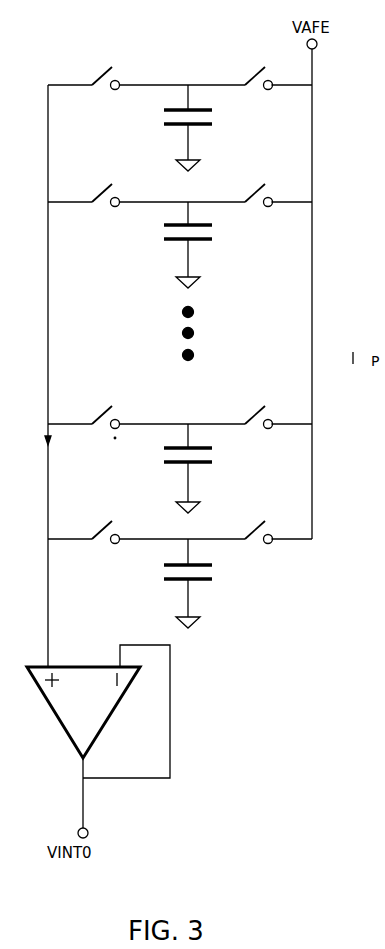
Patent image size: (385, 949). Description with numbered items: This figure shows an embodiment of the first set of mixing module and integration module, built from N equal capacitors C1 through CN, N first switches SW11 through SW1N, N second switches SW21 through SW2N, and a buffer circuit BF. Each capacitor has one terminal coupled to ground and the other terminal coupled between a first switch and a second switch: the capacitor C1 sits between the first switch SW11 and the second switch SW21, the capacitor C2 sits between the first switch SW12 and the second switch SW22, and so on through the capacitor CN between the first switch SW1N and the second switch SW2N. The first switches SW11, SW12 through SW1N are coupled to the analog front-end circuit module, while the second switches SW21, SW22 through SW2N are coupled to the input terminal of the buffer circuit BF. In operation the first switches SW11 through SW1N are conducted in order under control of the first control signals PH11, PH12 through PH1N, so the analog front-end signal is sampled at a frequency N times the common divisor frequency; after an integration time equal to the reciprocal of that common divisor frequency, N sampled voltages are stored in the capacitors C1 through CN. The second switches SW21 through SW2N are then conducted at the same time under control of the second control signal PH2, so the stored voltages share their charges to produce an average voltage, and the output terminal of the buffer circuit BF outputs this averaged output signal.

The second switch SW21 is at (95, 95).
The first switch SW11 is at (259, 95).
The second switch SW22 is at (96, 210).
The first switch SW12 is at (259, 210).
The second switch SW2N is at (95, 547).
The first switch SW1N is at (259, 547).
The capacitor C1 is at (173, 128).
The capacitor C2 is at (173, 245).
The capacitor CN is at (163, 586).
The second control signal PH2 is at (93, 281).
The first control signal PH11 is at (255, 49).
The first control signal PH12 is at (254, 166).
The first control signal PH1N is at (252, 509).
The buffer circuit BF is at (98, 741).